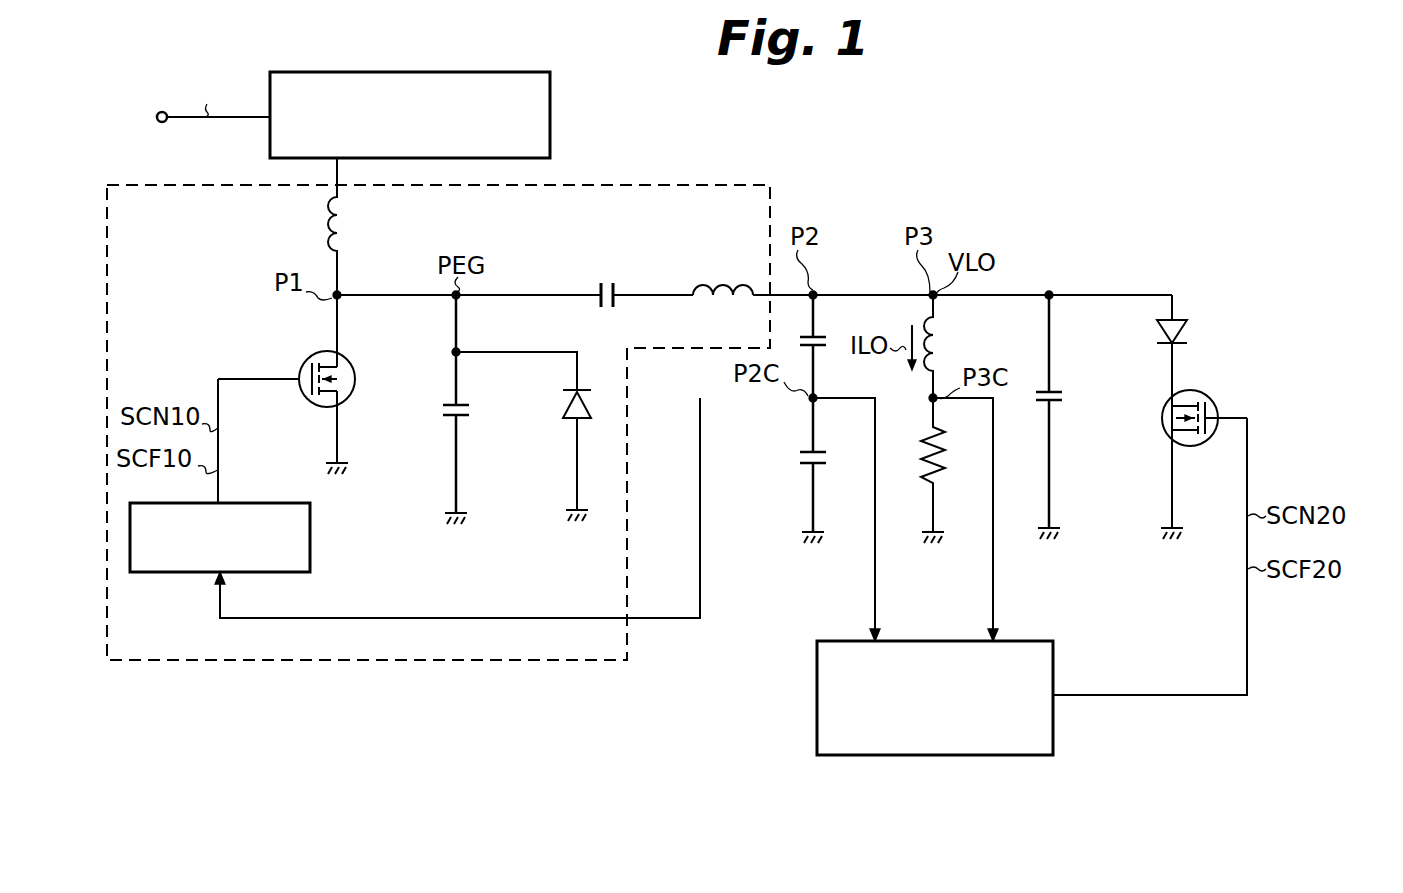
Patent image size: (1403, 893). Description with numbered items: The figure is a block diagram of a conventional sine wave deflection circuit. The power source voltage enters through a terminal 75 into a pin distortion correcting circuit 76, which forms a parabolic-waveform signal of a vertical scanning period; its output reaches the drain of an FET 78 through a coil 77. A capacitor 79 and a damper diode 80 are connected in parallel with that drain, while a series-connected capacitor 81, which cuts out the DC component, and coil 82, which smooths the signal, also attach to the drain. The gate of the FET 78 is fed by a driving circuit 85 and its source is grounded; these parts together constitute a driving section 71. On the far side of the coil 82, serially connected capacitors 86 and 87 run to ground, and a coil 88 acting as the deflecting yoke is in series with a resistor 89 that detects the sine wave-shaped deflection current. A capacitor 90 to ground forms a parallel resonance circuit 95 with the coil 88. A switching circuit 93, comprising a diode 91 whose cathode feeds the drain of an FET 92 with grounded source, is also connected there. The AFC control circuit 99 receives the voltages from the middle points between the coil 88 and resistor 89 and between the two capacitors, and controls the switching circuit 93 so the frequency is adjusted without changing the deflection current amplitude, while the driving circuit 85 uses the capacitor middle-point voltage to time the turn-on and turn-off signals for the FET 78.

The driving section 71 is at (744, 184).
The terminal 75 is at (166, 124).
The pin distortion correcting circuit 76 is at (551, 105).
The coil 77 is at (350, 235).
The FET 78 is at (304, 362).
The capacitor 79 is at (452, 418).
The damper diode 80 is at (566, 416).
The capacitor 81 is at (606, 284).
The coil 82 is at (716, 286).
The driving circuit 85 is at (178, 574).
The capacitor 86 is at (824, 326).
The capacitor 87 is at (806, 468).
The coil 88 is at (942, 347).
The resistor 89 is at (923, 474).
The capacitor 90 is at (1070, 392).
The diode 91 is at (1185, 332).
The FET 92 is at (1212, 400).
The switching circuit 93 is at (1252, 318).
The parallel resonance circuit 95 is at (1005, 330).
The AFC control circuit 99 is at (1055, 730).